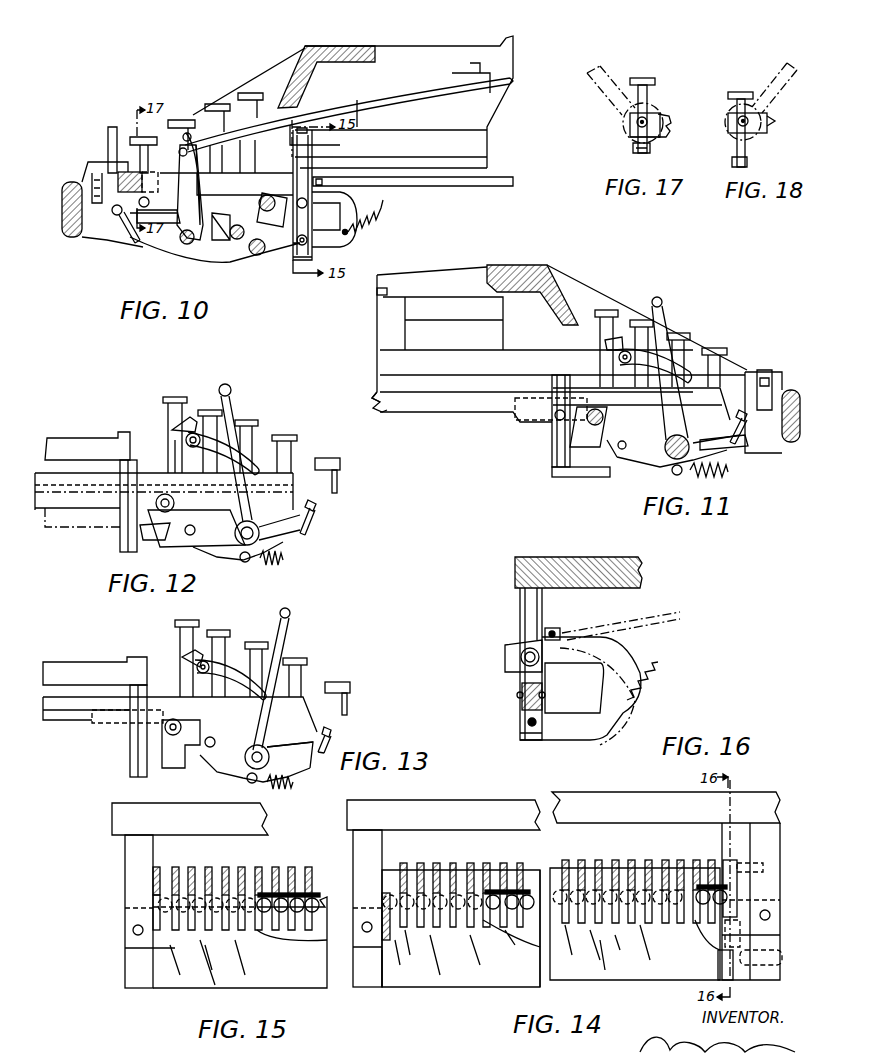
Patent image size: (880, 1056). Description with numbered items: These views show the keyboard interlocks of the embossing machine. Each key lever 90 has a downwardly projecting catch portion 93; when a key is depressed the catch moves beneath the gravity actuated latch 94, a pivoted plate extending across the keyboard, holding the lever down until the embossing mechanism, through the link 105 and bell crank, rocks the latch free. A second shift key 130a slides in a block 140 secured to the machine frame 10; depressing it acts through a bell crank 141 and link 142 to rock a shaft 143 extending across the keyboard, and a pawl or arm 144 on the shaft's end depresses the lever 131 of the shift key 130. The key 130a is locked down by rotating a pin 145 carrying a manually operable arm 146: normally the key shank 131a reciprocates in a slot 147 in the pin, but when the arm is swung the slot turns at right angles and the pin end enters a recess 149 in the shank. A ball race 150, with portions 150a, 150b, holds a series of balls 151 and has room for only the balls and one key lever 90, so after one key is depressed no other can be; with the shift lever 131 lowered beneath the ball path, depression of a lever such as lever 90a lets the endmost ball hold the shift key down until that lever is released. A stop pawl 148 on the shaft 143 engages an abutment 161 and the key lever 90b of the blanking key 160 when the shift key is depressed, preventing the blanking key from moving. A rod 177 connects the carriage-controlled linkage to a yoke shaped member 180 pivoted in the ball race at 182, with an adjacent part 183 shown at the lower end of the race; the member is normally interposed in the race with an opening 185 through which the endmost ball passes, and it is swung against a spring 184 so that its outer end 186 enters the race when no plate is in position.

In FIG. 10, the machine frame 10 is at (62, 223).
In FIG. 11, the machine frame 10 is at (800, 395).
In FIG. 11, the key lever 90 is at (380, 412).
In FIG. 15, the key lever 90 is at (243, 867).
In FIG. 14, the key lever 90 is at (532, 850).
In FIG. 14, the key lever 90a is at (452, 890).
In FIG. 12, the key lever of blanking key 90b is at (173, 450).
In FIG. 11, the catch portion 93 is at (744, 412).
In FIG. 13, the catch portion 93 is at (313, 723).
In FIG. 10, the latch 94 is at (108, 243).
In FIG. 11, the latch 94 is at (742, 433).
In FIG. 13, the latch 94 is at (327, 747).
In FIG. 10, the link 105 is at (370, 110).
In FIG. 11, the shift key 130 is at (728, 348).
In FIG. 12, the shift key 130 is at (288, 437).
In FIG. 13, the shift key 130 is at (305, 658).
In FIG. 10, the second shift key 130a is at (143, 137).
In FIG. 17, the second shift key 130a is at (652, 80).
In FIG. 18, the second shift key 130a is at (740, 92).
In FIG. 11, the shift key lever 131 is at (641, 404).
In FIG. 12, the shift key lever 131 is at (275, 477).
In FIG. 13, the shift key lever 131 is at (303, 695).
In FIG. 15, the shift key lever 131 is at (160, 868).
In FIG. 14, the shift key lever 131 is at (386, 960).
In FIG. 10, the key shank 131a is at (147, 152).
In FIG. 17, the key shank 131a is at (638, 96).
In FIG. 18, the key shank 131a is at (748, 143).
In FIG. 10, the block 140 is at (158, 186).
In FIG. 17, the block 140 is at (662, 137).
In FIG. 18, the block 140 is at (755, 131).
In FIG. 10, the bell crank 141 is at (187, 203).
In FIG. 17, the bell crank 141 is at (636, 153).
In FIG. 18, the bell crank 141 is at (738, 165).
In FIG. 10, the link 142 is at (207, 163).
In FIG. 10, the shaft 143 is at (243, 170).
In FIG. 11, the shaft 143 is at (620, 367).
In FIG. 12, the shaft 143 is at (187, 441).
In FIG. 13, the shaft 143 is at (197, 680).
In FIG. 11, the pawl or arm 144 is at (688, 377).
In FIG. 12, the pawl or arm 144 is at (258, 462).
In FIG. 13, the pawl or arm 144 is at (233, 667).
In FIG. 17, the pin 145 is at (648, 117).
In FIG. 18, the pin 145 is at (767, 118).
In FIG. 10, the manually operable arm 146 is at (113, 127).
In FIG. 17, the manually operable arm 146 is at (611, 72).
In FIG. 18, the manually operable arm 146 is at (800, 57).
In FIG. 17, the slot 147 is at (662, 130).
In FIG. 18, the slot 147 is at (765, 124).
In FIG. 11, the stop pawl 148 is at (610, 350).
In FIG. 12, the stop pawl 148 is at (173, 430).
In FIG. 13, the stop pawl 148 is at (193, 662).
In FIG. 10, the recess 149 is at (140, 163).
In FIG. 17, the recess 149 is at (648, 103).
In FIG. 10, the ball race 150 is at (305, 163).
In FIG. 11, the ball race 150 is at (553, 457).
In FIG. 12, the ball race 150 is at (122, 541).
In FIG. 13, the ball race 150 is at (130, 765).
In FIG. 16, the ball race 150 is at (530, 677).
In FIG. 14, the ball race 150 is at (582, 980).
In FIG. 14, the ball race portion 150a is at (380, 863).
In FIG. 14, the ball race portion 150b is at (740, 893).
In FIG. 16, the balls 151 is at (523, 652).
In FIG. 15, the balls 151 is at (320, 897).
In FIG. 14, the balls 151 is at (540, 890).
In FIG. 11, the blanking key 160 is at (610, 310).
In FIG. 12, the blanking key 160 is at (163, 396).
In FIG. 13, the blanking key 160 is at (187, 622).
In FIG. 11, the abutment 161 is at (623, 312).
In FIG. 12, the abutment 161 is at (173, 397).
In FIG. 13, the abutment 161 is at (177, 635).
In FIG. 10, the rod 177 is at (497, 175).
In FIG. 16, the rod 177 is at (610, 622).
In FIG. 14, the rod 177 is at (763, 868).
In FIG. 10, the yoke shaped member 180 is at (340, 240).
In FIG. 16, the yoke shaped member 180 is at (610, 648).
In FIG. 16, the pivot 182 is at (530, 737).
In FIG. 14, the pivot 182 is at (718, 970).
In FIG. 16, the pin 183 is at (528, 723).
In FIG. 14, the pin 183 is at (750, 967).
In FIG. 10, the spring 184 is at (380, 217).
In FIG. 16, the spring 184 is at (657, 677).
In FIG. 16, the opening 185 is at (518, 657).
In FIG. 16, the outer end 186 is at (505, 660).